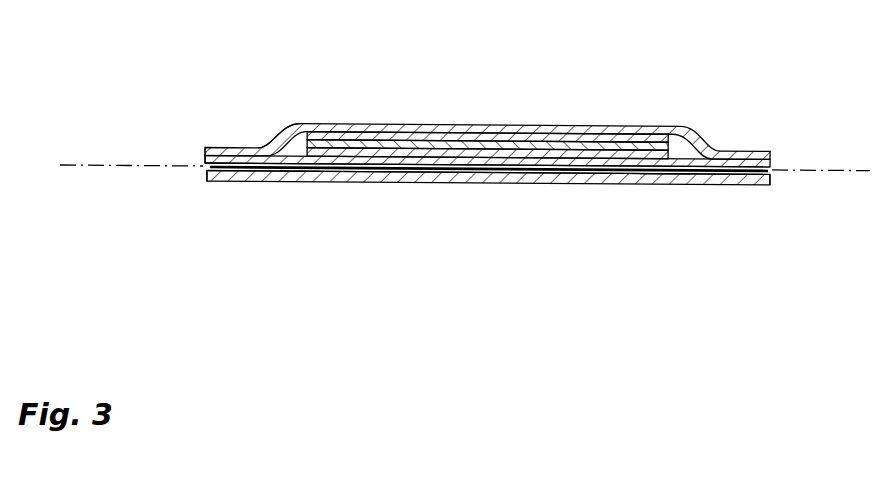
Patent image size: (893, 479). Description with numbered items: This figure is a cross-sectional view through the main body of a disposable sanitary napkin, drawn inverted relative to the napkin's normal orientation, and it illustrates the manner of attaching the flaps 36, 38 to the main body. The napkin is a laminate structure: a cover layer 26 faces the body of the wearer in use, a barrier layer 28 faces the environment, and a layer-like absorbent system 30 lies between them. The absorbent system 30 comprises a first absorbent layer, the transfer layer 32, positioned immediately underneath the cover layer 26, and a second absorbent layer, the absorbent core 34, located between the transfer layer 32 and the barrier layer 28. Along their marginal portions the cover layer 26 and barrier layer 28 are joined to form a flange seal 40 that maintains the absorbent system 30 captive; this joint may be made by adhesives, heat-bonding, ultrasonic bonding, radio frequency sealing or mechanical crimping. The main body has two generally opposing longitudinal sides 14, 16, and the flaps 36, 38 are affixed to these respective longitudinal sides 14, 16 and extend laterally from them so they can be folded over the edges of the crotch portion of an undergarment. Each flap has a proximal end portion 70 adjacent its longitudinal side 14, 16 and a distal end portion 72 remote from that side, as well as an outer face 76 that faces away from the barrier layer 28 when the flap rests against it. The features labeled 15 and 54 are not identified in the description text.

The longitudinal side 14 is at (773, 170).
The first end 15 is at (136, 165).
The longitudinal side 16 is at (205, 165).
The flange seal 40 is at (236, 150).
The absorbent system 30 is at (279, 138).
The cover layer 26 is at (402, 131).
The transfer layer 32 is at (432, 140).
The absorbent core 34 is at (493, 152).
The barrier layer 28 is at (227, 162).
The flap 38 is at (375, 180).
The outer face 76 is at (411, 178).
The distal end portion 72 is at (480, 177).
The first contact 54 is at (297, 172).
The flap 36 is at (660, 178).
The proximal end portion 70 is at (206, 181).